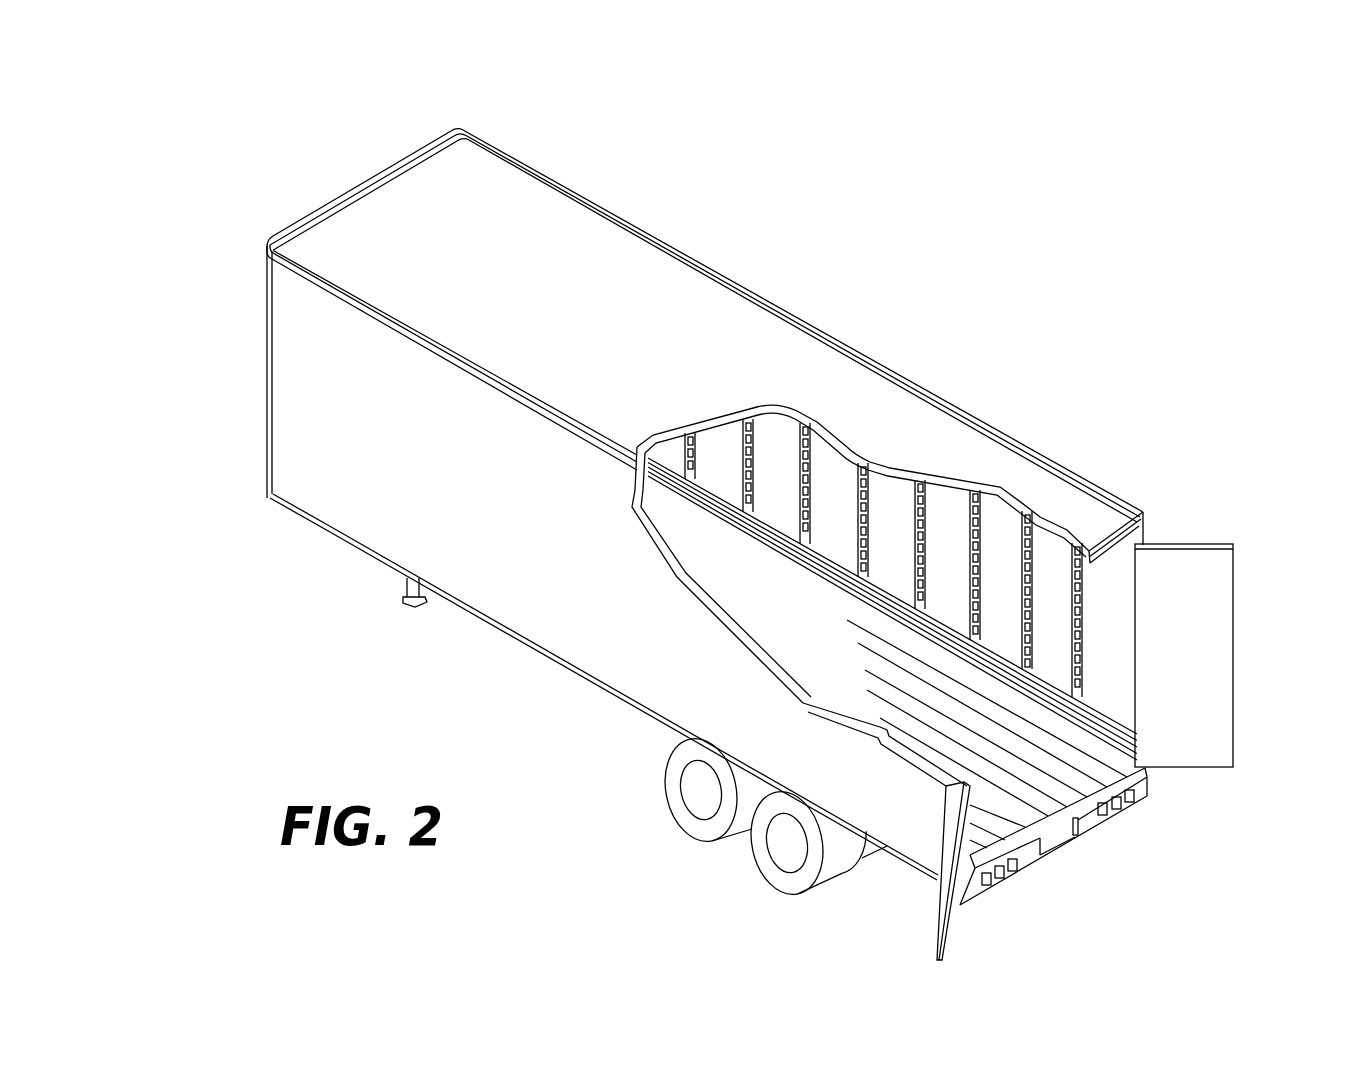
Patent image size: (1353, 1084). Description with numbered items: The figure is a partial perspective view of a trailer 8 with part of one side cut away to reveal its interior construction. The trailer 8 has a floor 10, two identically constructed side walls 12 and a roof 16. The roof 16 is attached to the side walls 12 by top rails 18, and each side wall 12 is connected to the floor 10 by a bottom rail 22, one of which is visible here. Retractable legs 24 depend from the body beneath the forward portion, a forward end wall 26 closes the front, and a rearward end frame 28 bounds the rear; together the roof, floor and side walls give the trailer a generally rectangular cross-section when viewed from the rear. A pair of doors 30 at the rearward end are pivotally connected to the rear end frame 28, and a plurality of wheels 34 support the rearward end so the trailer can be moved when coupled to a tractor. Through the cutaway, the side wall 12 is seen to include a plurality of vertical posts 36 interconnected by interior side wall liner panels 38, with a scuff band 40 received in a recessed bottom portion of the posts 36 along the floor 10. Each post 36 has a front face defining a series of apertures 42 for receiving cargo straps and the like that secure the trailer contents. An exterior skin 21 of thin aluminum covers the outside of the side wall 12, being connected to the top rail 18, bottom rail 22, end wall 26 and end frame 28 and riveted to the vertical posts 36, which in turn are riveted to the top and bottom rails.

The trailer 8 is at (906, 252).
The floor 10 is at (1078, 833).
The side wall 12 is at (612, 682).
The roof 16 is at (497, 208).
The top rail 18 is at (647, 233).
The exterior skin 21 is at (537, 549).
The bottom rail 22 is at (296, 512).
The retractable legs 24 is at (405, 587).
The forward end wall 26 is at (227, 381).
The rearward end frame 28 is at (1143, 527).
The doors 30 is at (1235, 637).
The wheels 34 is at (687, 832).
The vertical posts 36 is at (1083, 605).
The interior side wall liner panels 38 is at (827, 512).
The scuff band 40 is at (1093, 722).
The apertures 42 is at (975, 550).